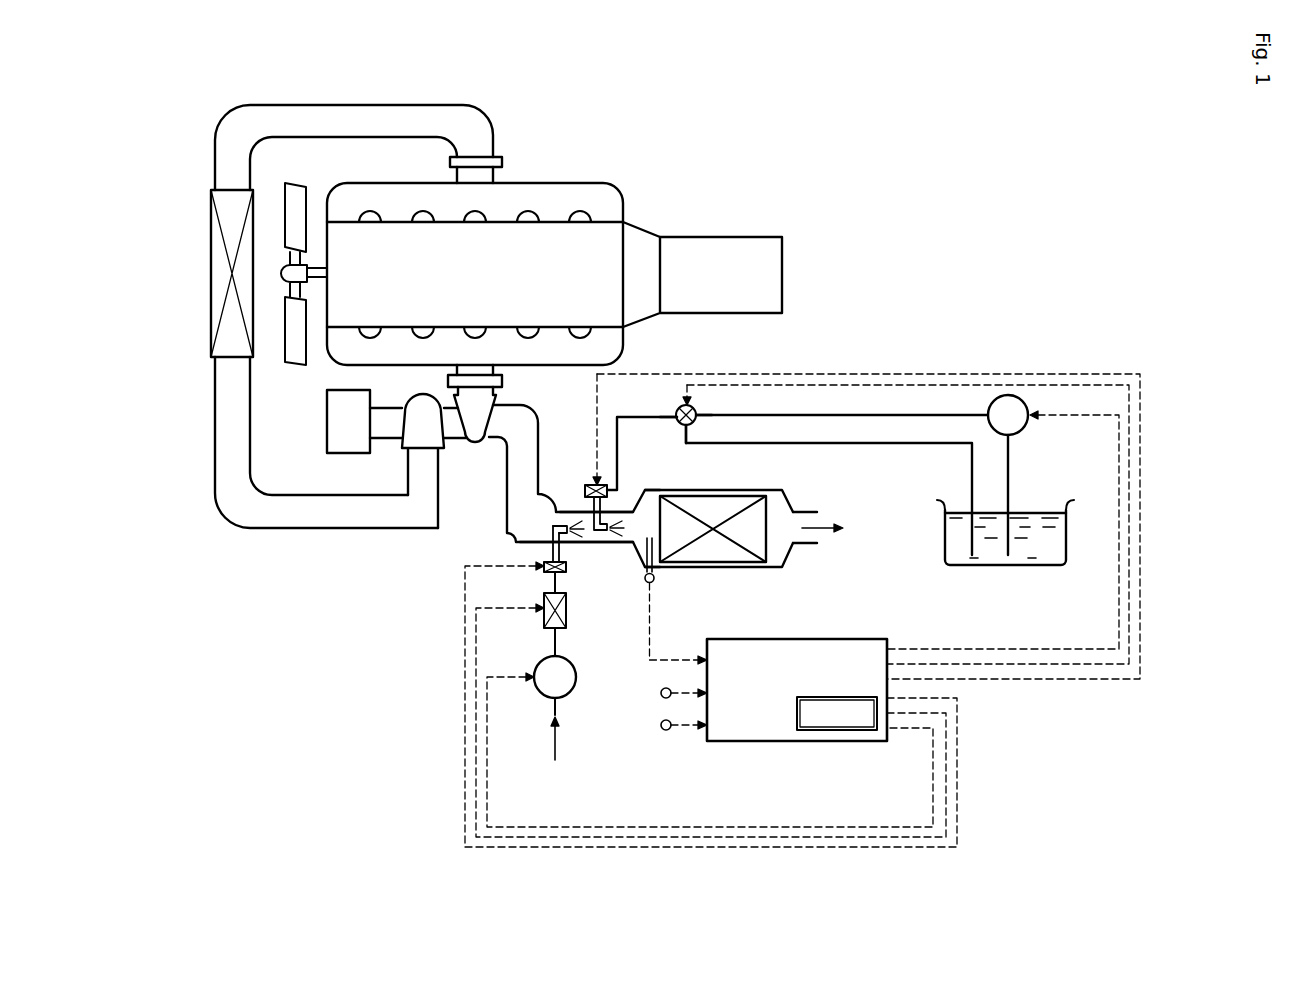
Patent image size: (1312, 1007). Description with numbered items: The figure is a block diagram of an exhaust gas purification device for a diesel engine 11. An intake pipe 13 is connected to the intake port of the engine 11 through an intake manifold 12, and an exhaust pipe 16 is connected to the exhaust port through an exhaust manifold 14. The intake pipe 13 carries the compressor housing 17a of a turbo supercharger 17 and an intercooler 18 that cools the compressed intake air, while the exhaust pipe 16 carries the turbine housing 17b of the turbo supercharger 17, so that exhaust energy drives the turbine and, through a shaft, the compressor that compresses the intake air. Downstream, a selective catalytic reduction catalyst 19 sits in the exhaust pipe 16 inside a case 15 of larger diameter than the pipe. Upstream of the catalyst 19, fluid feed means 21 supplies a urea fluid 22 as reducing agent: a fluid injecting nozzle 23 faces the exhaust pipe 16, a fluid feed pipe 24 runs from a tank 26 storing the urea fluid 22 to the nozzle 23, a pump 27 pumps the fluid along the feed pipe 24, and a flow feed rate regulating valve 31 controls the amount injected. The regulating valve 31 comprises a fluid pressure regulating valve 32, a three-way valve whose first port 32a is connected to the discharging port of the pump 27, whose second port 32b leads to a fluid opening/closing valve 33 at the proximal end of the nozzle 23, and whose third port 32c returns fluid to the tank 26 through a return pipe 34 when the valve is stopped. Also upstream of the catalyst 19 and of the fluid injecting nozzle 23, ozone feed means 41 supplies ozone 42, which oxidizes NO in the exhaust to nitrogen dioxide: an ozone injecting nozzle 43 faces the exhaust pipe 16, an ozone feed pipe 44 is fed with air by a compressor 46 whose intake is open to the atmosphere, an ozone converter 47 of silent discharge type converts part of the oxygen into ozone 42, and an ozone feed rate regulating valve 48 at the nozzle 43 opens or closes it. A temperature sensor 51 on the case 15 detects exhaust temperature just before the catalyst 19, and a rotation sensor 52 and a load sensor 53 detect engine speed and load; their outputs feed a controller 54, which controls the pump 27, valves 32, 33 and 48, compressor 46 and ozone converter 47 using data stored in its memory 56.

The diesel engine 11 is at (491, 285).
The intake manifold 12 is at (404, 183).
The intake pipe 13 is at (357, 105).
The exhaust manifold 14 is at (623, 352).
The case 15 is at (768, 490).
The exhaust pipe 16 is at (525, 410).
The turbo supercharger 17 is at (422, 494).
The compressor housing 17a is at (423, 437).
The turbine housing 17b is at (475, 432).
The intercooler 18 is at (211, 272).
The selective catalytic reduction catalyst 19 is at (695, 507).
The fluid feed means 21 is at (997, 565).
The urea fluid 22 is at (615, 543).
The fluid injecting nozzle 23 is at (608, 527).
The fluid feed pipe 24 is at (835, 415).
The tank 26 is at (945, 540).
The pump 27 is at (1023, 428).
The flow feed rate regulating valve 31 is at (827, 502).
The fluid pressure regulating valve 32 is at (700, 409).
The first port 32a is at (697, 421).
The second port 32b is at (677, 410).
The third port 32c is at (681, 428).
The fluid opening/closing valve 33 is at (586, 488).
The return pipe 34 is at (835, 443).
The ozone feed means 41 is at (550, 652).
The ozone 42 is at (568, 524).
The ozone injecting nozzle 43 is at (553, 527).
The ozone feed pipe 44 is at (552, 578).
The compressor 46 is at (576, 677).
The ozone converter 47 is at (567, 608).
The ozone feed rate regulating valve 48 is at (566, 568).
The temperature sensor 51 is at (655, 579).
The rotation sensor 52 is at (661, 693).
The load sensor 53 is at (661, 725).
The controller 54 is at (797, 714).
The memory 56 is at (828, 730).